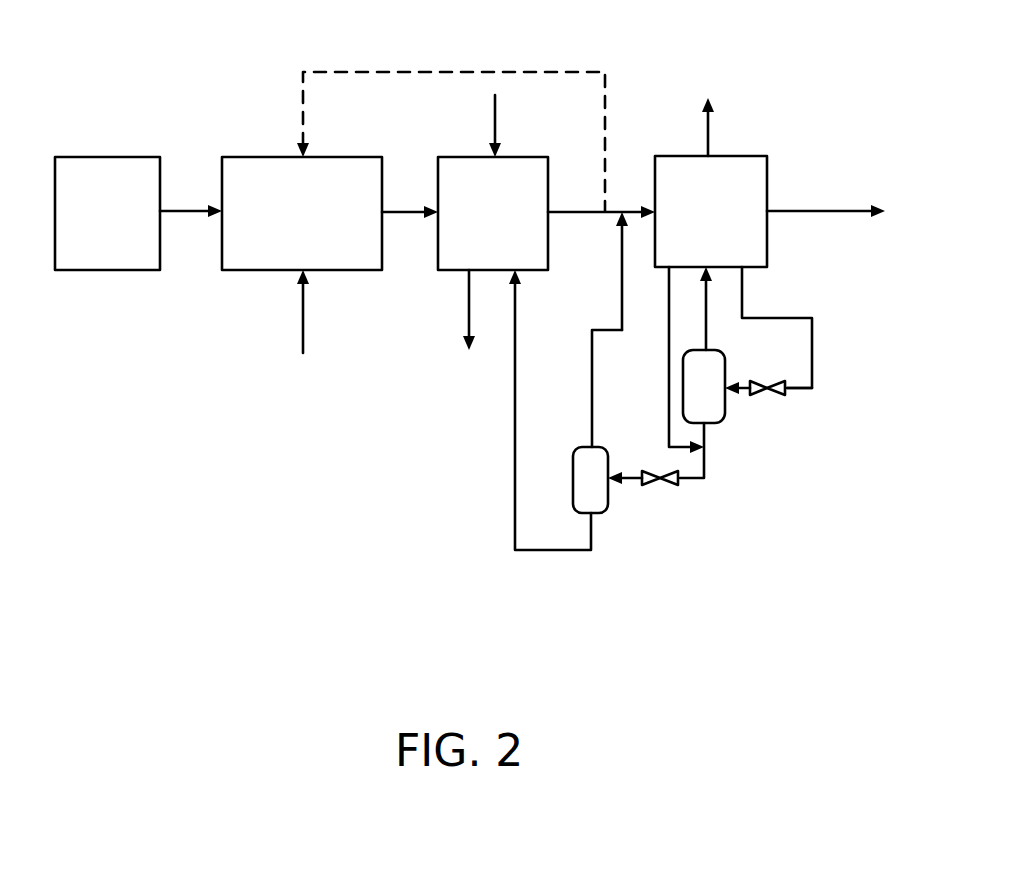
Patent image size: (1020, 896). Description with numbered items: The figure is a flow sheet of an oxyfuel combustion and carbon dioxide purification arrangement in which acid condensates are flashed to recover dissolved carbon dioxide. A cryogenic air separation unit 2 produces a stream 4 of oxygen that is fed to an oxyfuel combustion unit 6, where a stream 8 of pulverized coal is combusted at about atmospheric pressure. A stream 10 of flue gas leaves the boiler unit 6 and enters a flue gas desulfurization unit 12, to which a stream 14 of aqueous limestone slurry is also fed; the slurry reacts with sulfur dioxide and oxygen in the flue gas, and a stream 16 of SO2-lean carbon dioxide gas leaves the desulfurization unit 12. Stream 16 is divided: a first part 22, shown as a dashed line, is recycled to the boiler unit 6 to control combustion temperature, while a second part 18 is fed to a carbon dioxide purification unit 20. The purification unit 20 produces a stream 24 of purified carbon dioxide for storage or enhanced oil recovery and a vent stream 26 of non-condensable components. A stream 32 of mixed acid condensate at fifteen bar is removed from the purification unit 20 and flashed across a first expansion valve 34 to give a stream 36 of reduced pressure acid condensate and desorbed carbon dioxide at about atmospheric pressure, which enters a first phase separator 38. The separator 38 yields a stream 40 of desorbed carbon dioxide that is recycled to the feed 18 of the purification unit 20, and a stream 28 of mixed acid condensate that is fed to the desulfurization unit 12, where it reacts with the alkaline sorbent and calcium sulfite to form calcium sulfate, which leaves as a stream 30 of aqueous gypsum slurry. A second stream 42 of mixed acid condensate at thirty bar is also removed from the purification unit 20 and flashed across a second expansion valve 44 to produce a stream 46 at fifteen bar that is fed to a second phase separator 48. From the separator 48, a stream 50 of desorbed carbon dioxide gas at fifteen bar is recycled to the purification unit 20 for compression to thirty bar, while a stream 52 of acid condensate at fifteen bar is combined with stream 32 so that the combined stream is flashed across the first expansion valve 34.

The cryogenic air separation unit 2 is at (91, 224).
The stream of oxygen 4 is at (184, 214).
The oxyfuel combustion unit 6 is at (290, 224).
The stream of pulverized coal 8 is at (303, 318).
The stream of flue gas 10 is at (400, 212).
The flue gas desulfurization unit 12 is at (479, 224).
The stream of aqueous limestone slurry 14 is at (495, 120).
The stream of SO2-lean carbon dioxide gas 16 is at (572, 213).
The second part of stream 16 18 is at (625, 212).
The carbon dioxide purification unit 20 is at (696, 221).
The first part of stream 16 22 is at (485, 72).
The stream of purified carbon dioxide 24 is at (808, 211).
The vent stream 26 is at (708, 140).
The stream of mixed acid condensate 28 is at (515, 428).
The stream of calcium sulfate 30 is at (469, 312).
The stream of mixed acid condensate at 15 bar 32 is at (668, 352).
The first expansion valve 34 is at (662, 485).
The stream of reduced pressure first acid condensate and desorbed carbon dioxide 36 is at (635, 478).
The first phase separator 38 is at (581, 491).
The stream of desorbed carbon dioxide 40 is at (592, 392).
The stream of mixed acid condensate at 30 bar 42 is at (788, 318).
The second expansion valve 44 is at (775, 398).
The stream of reduced pressure acid condensate and desorbed carbon dioxide gas 46 is at (758, 386).
The second phase separator 48 is at (694, 396).
The stream of desorbed carbon dioxide gas at 15 bar 50 is at (706, 312).
The stream of acid condensate at 15 bar 52 is at (708, 432).